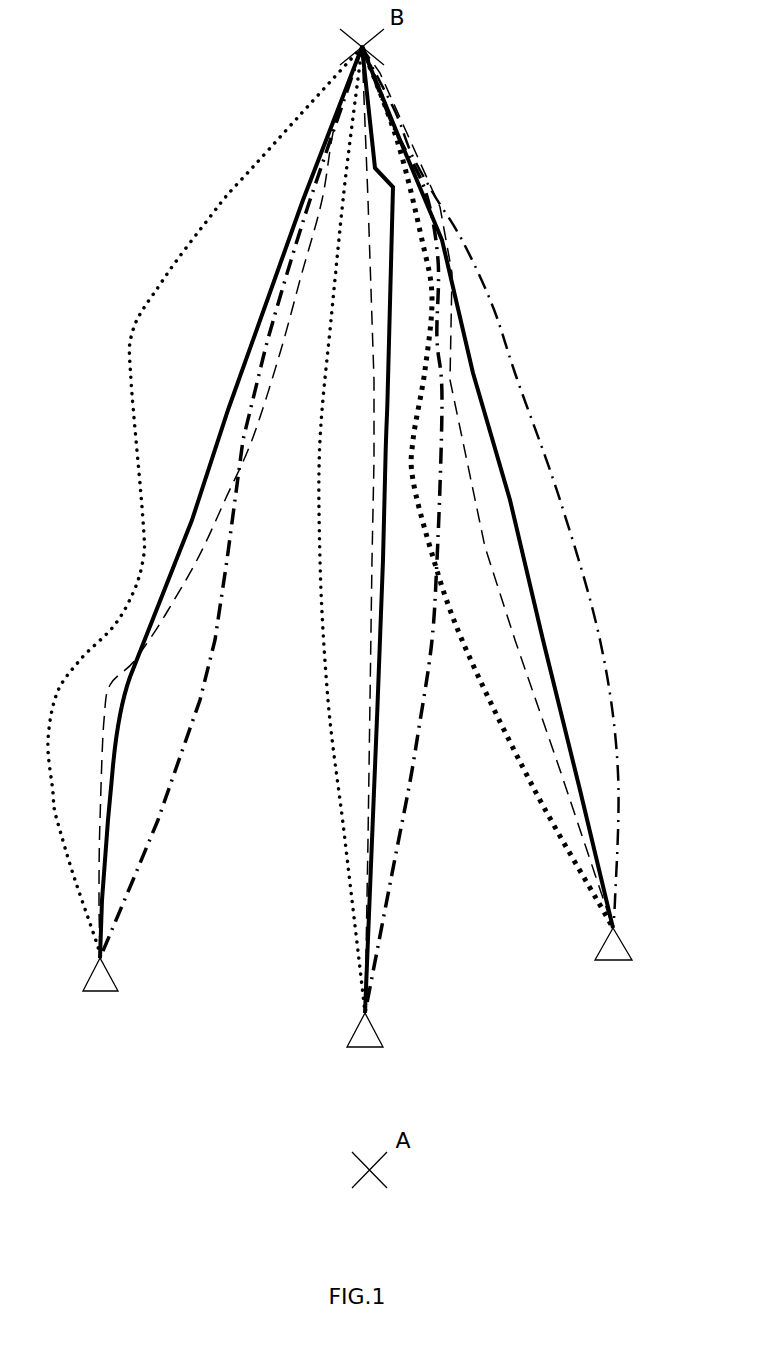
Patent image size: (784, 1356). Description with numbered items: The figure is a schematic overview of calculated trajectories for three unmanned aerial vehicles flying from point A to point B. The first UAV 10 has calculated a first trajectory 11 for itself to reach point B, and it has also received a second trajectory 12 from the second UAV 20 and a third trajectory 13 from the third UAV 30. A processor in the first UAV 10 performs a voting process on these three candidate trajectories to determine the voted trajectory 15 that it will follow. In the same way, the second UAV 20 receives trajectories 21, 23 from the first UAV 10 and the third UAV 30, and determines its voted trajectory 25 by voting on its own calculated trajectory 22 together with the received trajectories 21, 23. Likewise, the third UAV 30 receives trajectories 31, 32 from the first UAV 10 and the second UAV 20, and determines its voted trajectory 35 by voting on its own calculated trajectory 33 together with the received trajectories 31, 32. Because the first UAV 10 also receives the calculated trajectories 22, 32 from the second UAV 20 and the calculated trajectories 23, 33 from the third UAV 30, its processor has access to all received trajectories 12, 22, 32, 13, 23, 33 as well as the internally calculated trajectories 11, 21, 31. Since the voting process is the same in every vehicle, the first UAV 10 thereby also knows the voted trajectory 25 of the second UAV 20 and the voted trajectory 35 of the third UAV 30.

The first UAV 10 is at (96, 975).
The first trajectory 11 is at (135, 465).
The second trajectory 12 is at (167, 612).
The third trajectory 13 is at (200, 695).
The voted trajectory 15 is at (215, 443).
The second UAV 20 is at (365, 1025).
The trajectory 21 is at (337, 773).
The own calculated trajectory 22 is at (373, 423).
The trajectory 23 is at (415, 750).
The voted trajectory 25 is at (383, 623).
The third UAV 30 is at (615, 943).
The trajectory 31 is at (533, 788).
The trajectory 32 is at (485, 545).
The own calculated trajectory 33 is at (550, 458).
The voted trajectory 35 is at (510, 498).